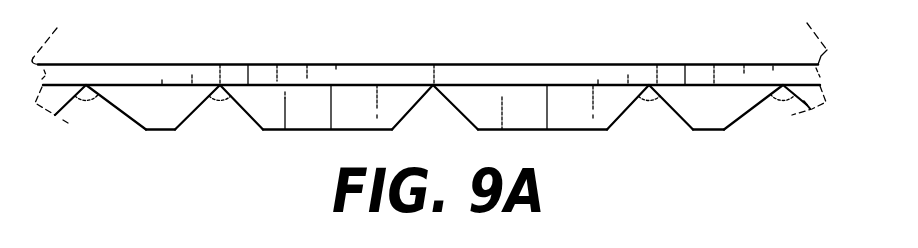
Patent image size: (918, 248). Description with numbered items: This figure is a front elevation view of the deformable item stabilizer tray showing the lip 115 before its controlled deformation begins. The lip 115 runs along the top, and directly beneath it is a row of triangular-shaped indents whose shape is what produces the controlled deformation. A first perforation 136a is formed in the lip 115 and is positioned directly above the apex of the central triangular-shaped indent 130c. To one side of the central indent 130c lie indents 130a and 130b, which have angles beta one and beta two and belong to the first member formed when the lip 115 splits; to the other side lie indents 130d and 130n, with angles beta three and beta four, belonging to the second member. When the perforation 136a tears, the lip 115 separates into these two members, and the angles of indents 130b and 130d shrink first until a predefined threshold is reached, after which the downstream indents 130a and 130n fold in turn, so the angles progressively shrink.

The lip 115 is at (593, 65).
The first perforation 136a is at (434, 73).
The indent 130a is at (98, 138).
The indent 130b is at (223, 138).
The central triangular-shaped indent 130c is at (418, 128).
The indent 130d is at (654, 138).
The indent 130n is at (778, 130).